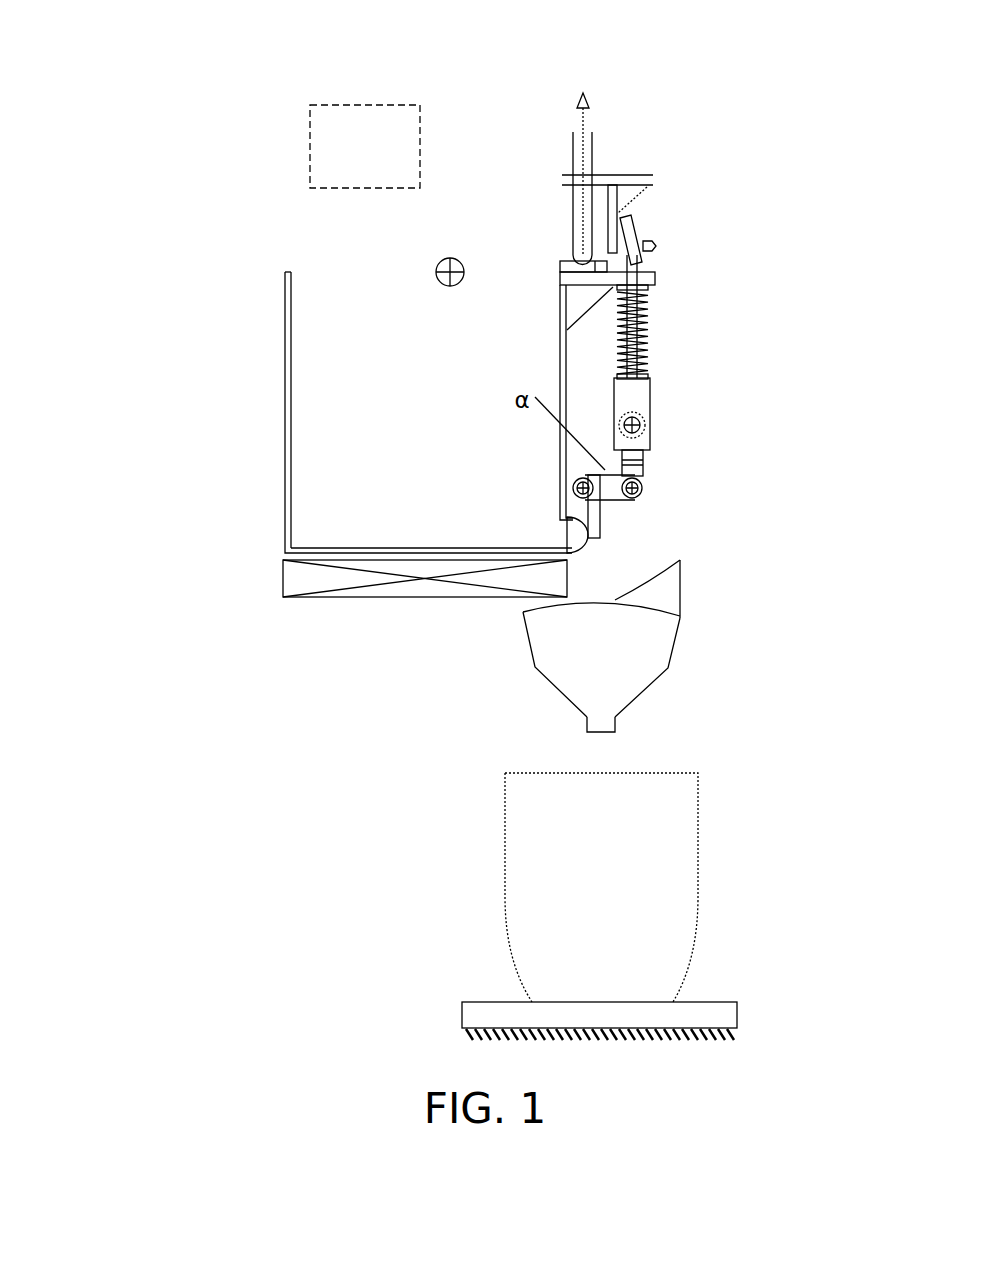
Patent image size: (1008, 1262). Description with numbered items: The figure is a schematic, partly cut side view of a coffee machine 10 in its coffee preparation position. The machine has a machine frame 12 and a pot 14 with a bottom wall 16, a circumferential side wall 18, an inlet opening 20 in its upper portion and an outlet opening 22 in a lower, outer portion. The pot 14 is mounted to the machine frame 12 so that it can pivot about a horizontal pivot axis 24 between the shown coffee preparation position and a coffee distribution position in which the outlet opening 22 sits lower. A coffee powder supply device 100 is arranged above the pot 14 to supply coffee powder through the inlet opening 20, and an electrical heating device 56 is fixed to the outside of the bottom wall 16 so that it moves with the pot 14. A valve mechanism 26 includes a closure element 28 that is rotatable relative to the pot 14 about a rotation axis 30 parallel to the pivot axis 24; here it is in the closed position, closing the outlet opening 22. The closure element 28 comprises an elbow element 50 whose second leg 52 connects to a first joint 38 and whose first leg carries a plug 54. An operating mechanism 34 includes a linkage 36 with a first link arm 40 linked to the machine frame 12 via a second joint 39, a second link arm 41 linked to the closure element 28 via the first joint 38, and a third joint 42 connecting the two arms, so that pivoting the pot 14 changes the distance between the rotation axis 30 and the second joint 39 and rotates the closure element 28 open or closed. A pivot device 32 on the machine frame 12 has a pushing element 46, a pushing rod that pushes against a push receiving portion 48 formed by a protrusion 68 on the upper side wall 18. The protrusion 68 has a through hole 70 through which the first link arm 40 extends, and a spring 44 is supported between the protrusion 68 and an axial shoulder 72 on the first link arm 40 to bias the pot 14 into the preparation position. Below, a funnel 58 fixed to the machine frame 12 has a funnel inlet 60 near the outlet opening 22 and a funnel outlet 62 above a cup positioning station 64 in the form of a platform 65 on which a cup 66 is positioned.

The coffee machine 10 is at (358, 61).
The coffee powder supply device 100 is at (328, 120).
The machine frame 12 is at (633, 178).
The pot 14 is at (283, 273).
The bottom wall 16 is at (290, 555).
The circumferential side wall 18 is at (287, 398).
The inlet opening 20 is at (348, 268).
The outlet opening 22 is at (563, 537).
The horizontal pivot axis 24 is at (451, 258).
The valve mechanism 26 is at (612, 520).
The closure element 28 is at (600, 540).
The rotation axis 30 is at (572, 527).
The pivot device 32 is at (605, 148).
The operating mechanism 34 is at (660, 395).
The linkage 36 is at (650, 408).
The first joint 38 is at (645, 485).
The second joint 39 is at (633, 237).
The first link arm 40 is at (633, 263).
The second link arm 41 is at (645, 467).
The third joint 42 is at (640, 425).
The spring 44 is at (638, 342).
The pushing element 46 is at (578, 222).
The push receiving portion 48 is at (565, 262).
The elbow element 50 is at (593, 497).
The second leg 52 is at (590, 470).
The plug 54 is at (563, 535).
The electrical heating device 56 is at (302, 575).
The funnel 58 is at (653, 630).
The funnel inlet 60 is at (615, 600).
The funnel outlet 62 is at (600, 731).
The cup positioning station 64 is at (456, 1013).
The platform 65 is at (712, 1022).
The cup 66 is at (538, 860).
The protrusion 68 is at (582, 277).
The through hole 70 is at (633, 280).
The axial shoulder 72 is at (612, 380).